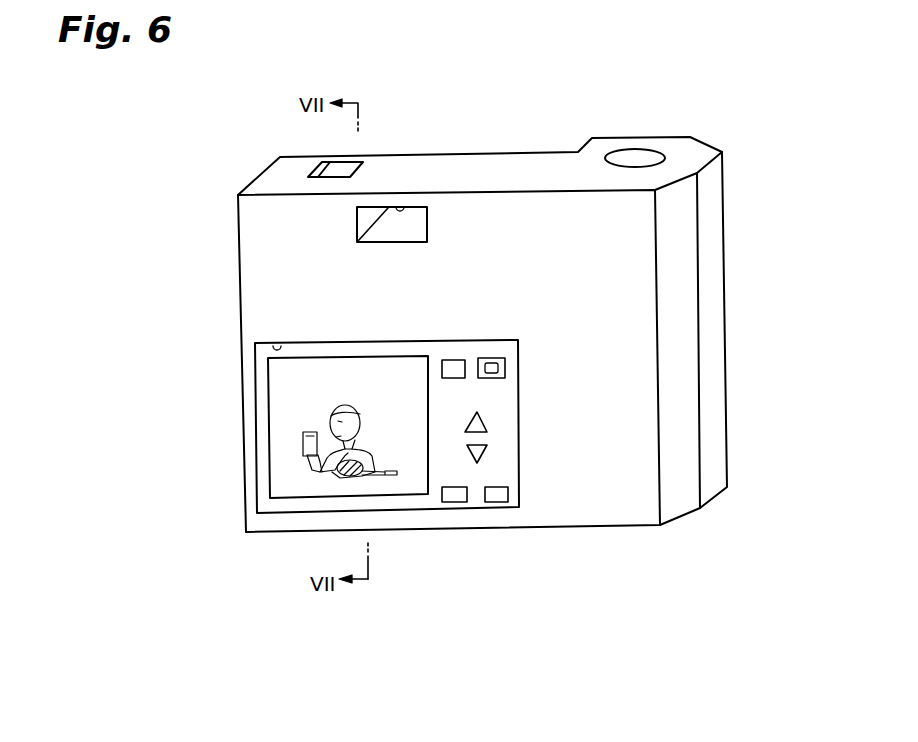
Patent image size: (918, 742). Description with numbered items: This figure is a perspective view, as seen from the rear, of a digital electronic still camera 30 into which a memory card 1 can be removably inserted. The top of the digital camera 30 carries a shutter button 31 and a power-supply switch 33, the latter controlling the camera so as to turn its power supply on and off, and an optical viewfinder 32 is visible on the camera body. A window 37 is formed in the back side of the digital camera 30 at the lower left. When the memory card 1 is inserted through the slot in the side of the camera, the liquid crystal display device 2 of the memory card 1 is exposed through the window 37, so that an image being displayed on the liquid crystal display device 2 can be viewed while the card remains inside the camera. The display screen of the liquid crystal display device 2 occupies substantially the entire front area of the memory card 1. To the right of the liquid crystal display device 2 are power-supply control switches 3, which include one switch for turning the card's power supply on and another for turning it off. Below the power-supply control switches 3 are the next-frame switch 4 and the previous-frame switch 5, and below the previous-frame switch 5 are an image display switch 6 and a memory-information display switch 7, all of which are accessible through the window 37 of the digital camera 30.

The digital electronic still camera 30 is at (666, 101).
The shutter button 31 is at (652, 158).
The optical viewfinder 32 is at (412, 207).
The power-supply switch 33 is at (348, 168).
The window 37 is at (273, 347).
The memory card 1 is at (491, 334).
The liquid crystal display device 2 is at (358, 370).
The power-supply control switches 3 is at (476, 355).
The next-frame switch 4 is at (487, 425).
The previous-frame switch 5 is at (488, 455).
The image display switch 6 is at (453, 503).
The memory-information display switch 7 is at (497, 503).